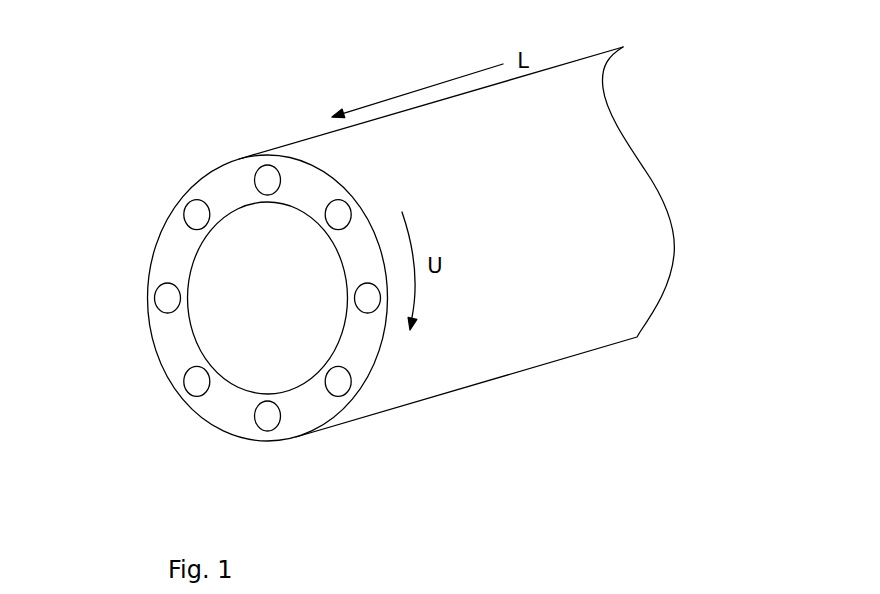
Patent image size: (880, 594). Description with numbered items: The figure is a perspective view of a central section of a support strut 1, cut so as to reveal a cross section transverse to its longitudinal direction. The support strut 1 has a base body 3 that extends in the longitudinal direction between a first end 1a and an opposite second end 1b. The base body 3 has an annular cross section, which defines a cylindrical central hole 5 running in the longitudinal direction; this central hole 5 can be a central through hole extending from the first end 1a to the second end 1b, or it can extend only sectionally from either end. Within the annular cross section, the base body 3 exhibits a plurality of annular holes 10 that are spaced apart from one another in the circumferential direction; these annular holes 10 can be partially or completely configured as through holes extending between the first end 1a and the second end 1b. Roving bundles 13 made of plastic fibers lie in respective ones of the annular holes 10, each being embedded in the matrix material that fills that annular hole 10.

The support strut 1 is at (460, 438).
The first end 1a is at (137, 362).
The second end 1b is at (667, 193).
The base body 3 is at (506, 331).
The central hole 5 is at (258, 340).
The annular holes 10 is at (187, 203).
The roving bundles 13 is at (204, 198).